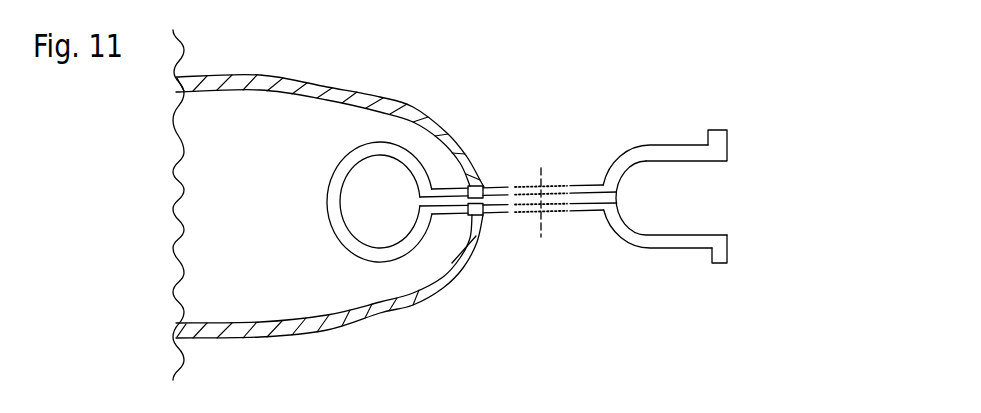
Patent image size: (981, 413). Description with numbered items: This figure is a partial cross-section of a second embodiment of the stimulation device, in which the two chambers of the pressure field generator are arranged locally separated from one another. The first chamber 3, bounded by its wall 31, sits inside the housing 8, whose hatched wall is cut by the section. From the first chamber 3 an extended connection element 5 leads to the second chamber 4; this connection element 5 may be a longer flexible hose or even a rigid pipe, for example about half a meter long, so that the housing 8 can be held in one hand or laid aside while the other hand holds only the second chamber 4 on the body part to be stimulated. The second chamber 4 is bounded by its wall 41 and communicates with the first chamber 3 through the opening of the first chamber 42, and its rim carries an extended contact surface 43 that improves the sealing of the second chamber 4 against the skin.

The housing 8 is at (262, 82).
The first chamber 3 is at (367, 185).
The wall of first chamber 31 is at (363, 250).
The connection element 5 is at (493, 200).
The second chamber 4 is at (675, 188).
The wall of second chamber 41 is at (658, 243).
The opening of first chamber 42 is at (720, 203).
The contact surface 43 is at (722, 248).